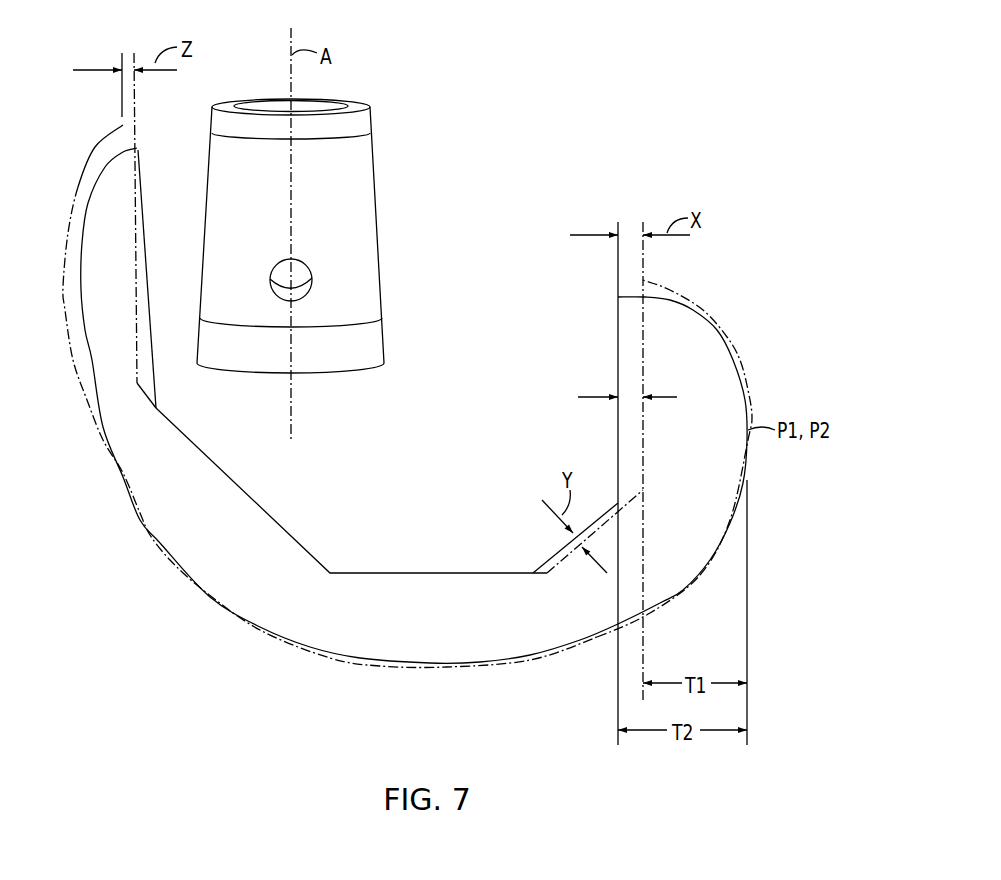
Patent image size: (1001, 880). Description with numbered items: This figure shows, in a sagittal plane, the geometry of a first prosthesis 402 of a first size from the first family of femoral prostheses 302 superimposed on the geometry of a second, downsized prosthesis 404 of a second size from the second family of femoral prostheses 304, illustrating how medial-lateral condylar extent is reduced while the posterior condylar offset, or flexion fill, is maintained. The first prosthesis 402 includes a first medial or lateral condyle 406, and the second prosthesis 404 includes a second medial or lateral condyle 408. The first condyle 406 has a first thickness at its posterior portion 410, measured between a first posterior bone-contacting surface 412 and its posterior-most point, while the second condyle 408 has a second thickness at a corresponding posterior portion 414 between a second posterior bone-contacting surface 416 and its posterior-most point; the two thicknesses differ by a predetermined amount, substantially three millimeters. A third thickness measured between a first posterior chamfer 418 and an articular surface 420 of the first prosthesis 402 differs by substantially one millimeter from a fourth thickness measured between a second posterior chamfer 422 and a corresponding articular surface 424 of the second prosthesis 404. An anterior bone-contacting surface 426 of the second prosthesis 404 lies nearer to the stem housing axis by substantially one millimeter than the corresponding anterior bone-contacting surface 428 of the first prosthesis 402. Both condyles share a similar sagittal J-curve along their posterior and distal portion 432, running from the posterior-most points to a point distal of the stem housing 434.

The first family of femoral prostheses 302 is at (690, 48).
The second family of femoral prostheses 304 is at (330, 396).
The first prosthesis 402 is at (665, 400).
The second prosthesis 404 is at (593, 397).
The first medial condyle or first lateral condyle 406 is at (702, 303).
The second medial condyle or second lateral condyle 408 is at (667, 300).
The posterior portion 410 is at (766, 393).
The first posterior bone-contacting surface 412 is at (642, 325).
The posterior portion 414 is at (760, 360).
The second posterior bone-contacting surface 416 is at (618, 360).
The first posterior chamfer 418 is at (560, 545).
The articular surface 420 is at (683, 590).
The second posterior chamfer 422 is at (540, 562).
The articular surface 424 is at (657, 603).
The anterior bone-contacting surface 426 is at (140, 195).
The anterior bone-contacting surface 428 is at (130, 247).
The posterior and distal portion 432 is at (541, 672).
The stem housing 434 is at (355, 223).